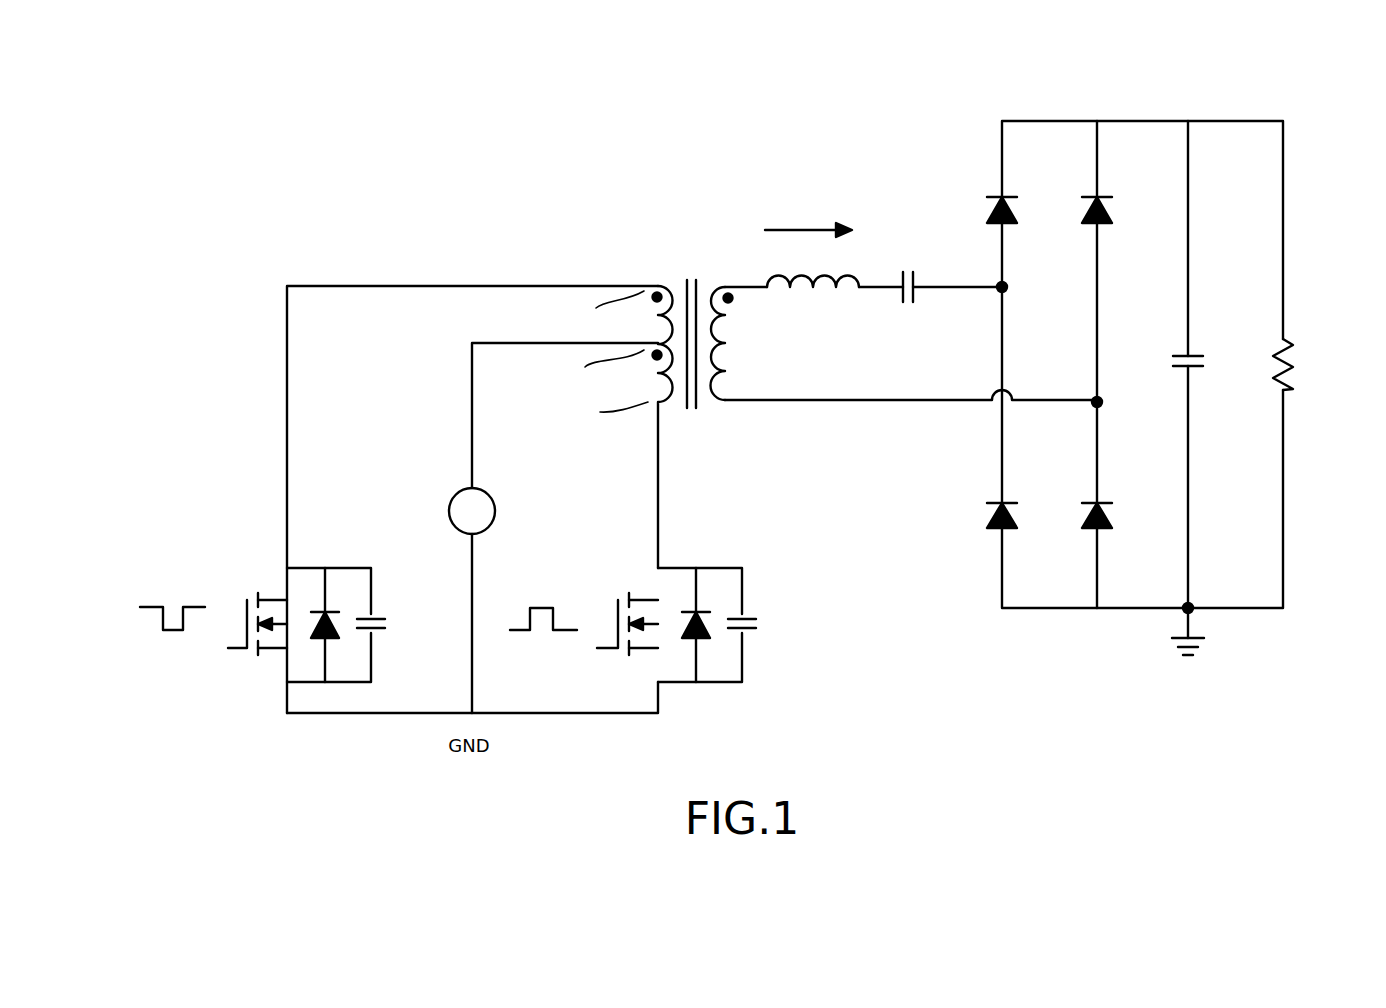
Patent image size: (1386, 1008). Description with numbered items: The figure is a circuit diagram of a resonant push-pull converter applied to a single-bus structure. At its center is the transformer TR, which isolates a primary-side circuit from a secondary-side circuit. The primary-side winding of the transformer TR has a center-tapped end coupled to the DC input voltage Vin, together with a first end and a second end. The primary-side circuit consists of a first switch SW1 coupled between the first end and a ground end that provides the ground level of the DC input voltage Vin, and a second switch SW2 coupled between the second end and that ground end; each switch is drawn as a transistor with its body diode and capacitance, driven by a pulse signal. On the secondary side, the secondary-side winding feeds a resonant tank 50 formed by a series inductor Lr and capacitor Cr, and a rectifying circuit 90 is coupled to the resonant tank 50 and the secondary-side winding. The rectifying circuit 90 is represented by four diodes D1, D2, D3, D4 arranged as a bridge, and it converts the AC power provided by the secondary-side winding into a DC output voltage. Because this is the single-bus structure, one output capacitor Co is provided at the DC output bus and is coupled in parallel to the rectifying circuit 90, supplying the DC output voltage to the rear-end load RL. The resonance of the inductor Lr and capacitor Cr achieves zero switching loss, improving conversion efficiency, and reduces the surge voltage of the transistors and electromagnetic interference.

The resonant tank 50 is at (911, 244).
The rectifying circuit 90 is at (1160, 438).
The transformer TR is at (693, 252).
The first switch SW1 is at (262, 621).
The second switch SW2 is at (633, 621).
The inductor Lr is at (812, 244).
The capacitor Cr is at (930, 272).
The output capacitor Co is at (1175, 345).
The rear-end load RL is at (1269, 352).
The diode D1 is at (988, 195).
The diode D2 is at (988, 500).
The diode D3 is at (1083, 195).
The diode D4 is at (1083, 500).
The DC input voltage Vin is at (453, 506).